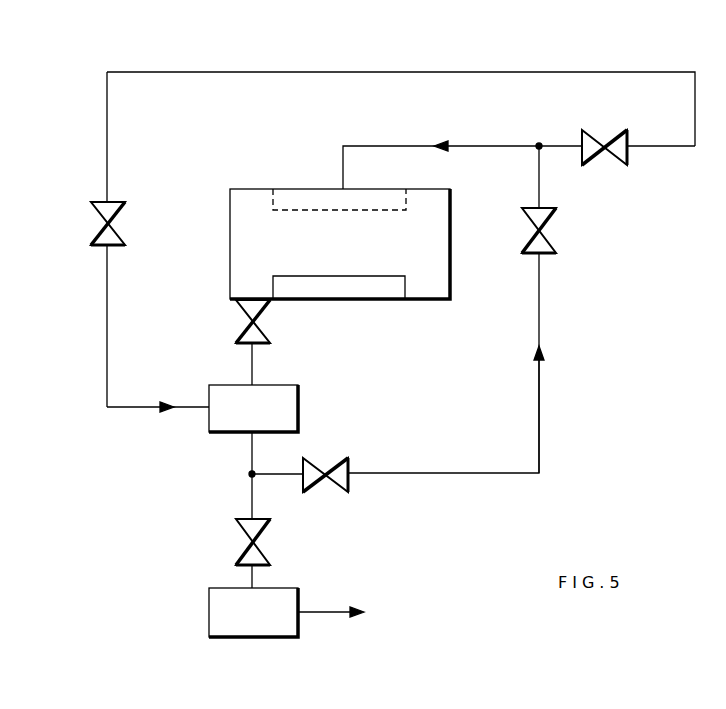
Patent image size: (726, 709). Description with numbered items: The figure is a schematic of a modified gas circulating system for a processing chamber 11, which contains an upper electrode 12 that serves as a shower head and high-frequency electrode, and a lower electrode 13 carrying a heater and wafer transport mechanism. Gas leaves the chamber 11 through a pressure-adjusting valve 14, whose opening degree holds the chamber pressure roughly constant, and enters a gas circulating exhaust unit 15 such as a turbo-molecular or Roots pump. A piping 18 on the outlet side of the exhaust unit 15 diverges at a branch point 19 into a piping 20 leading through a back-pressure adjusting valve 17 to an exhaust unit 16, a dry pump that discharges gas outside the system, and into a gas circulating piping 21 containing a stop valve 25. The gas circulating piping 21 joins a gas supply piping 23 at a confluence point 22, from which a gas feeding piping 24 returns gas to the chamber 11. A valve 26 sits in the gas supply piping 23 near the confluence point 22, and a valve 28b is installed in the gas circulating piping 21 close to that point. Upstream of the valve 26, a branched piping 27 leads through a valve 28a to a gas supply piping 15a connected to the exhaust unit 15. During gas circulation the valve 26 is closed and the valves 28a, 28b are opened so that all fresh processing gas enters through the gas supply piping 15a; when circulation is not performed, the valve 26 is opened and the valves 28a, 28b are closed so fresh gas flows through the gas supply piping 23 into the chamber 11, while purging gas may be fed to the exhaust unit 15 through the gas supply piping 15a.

The chamber 11 is at (230, 238).
The upper electrode 12 is at (294, 193).
The lower electrode 13 is at (352, 293).
The pressure-adjusting valve 14 is at (246, 330).
The gas circulating exhaust unit 15 is at (298, 405).
The gas supply piping 15a is at (133, 407).
The exhaust unit 16 is at (209, 616).
The back-pressure adjusting valve 17 is at (246, 534).
The piping 18 is at (250, 456).
The branch point 19 is at (248, 476).
The piping 20 is at (253, 500).
The gas circulating piping 21 is at (478, 474).
The confluence point 22 is at (539, 144).
The gas supply piping 23 is at (667, 147).
The gas feeding piping 24 is at (377, 146).
The valve 25 is at (347, 458).
The valve 26 is at (600, 132).
The branched piping 27 is at (500, 72).
The valve 28a is at (100, 217).
The valve 28b is at (546, 232).